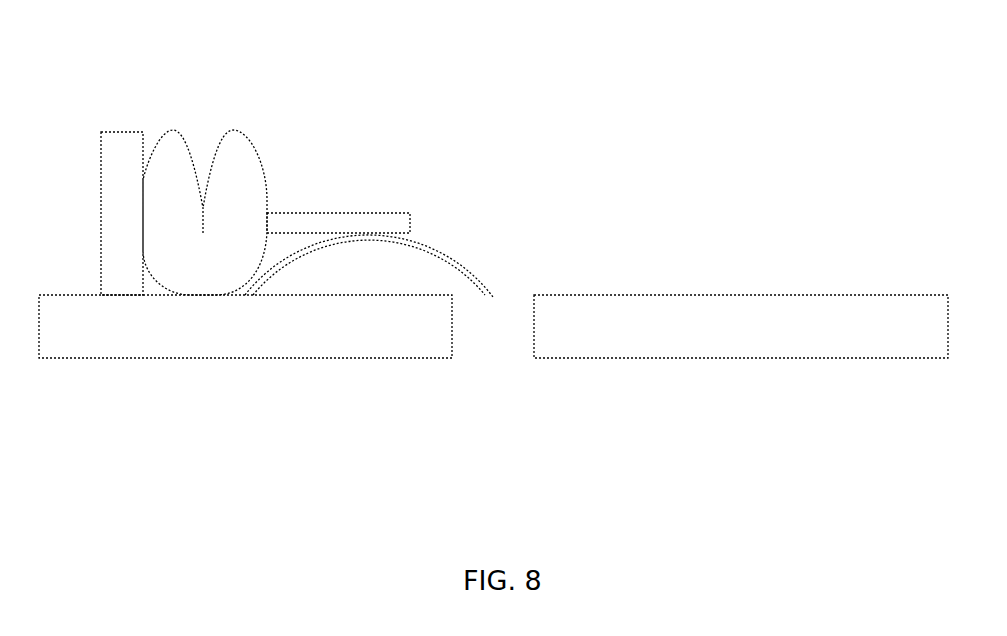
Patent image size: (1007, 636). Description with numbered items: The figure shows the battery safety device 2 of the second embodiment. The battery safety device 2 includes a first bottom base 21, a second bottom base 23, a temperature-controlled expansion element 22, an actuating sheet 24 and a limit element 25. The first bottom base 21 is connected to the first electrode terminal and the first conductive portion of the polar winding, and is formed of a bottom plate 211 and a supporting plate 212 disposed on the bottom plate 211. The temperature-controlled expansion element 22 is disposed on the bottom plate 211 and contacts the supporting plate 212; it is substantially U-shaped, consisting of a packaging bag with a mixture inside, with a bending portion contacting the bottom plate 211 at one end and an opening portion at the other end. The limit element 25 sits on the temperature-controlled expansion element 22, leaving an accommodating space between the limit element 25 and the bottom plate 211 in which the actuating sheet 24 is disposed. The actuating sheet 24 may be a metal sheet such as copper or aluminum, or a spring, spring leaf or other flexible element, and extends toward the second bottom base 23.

The battery safety device 2 is at (41, 53).
The first bottom base 21 is at (64, 149).
The bottom plate 211 is at (245, 332).
The supporting plate 212 is at (118, 143).
The temperature-controlled expansion element 22 is at (238, 145).
The second bottom base 23 is at (765, 333).
The actuating sheet 24 is at (433, 250).
The limit element 25 is at (328, 223).